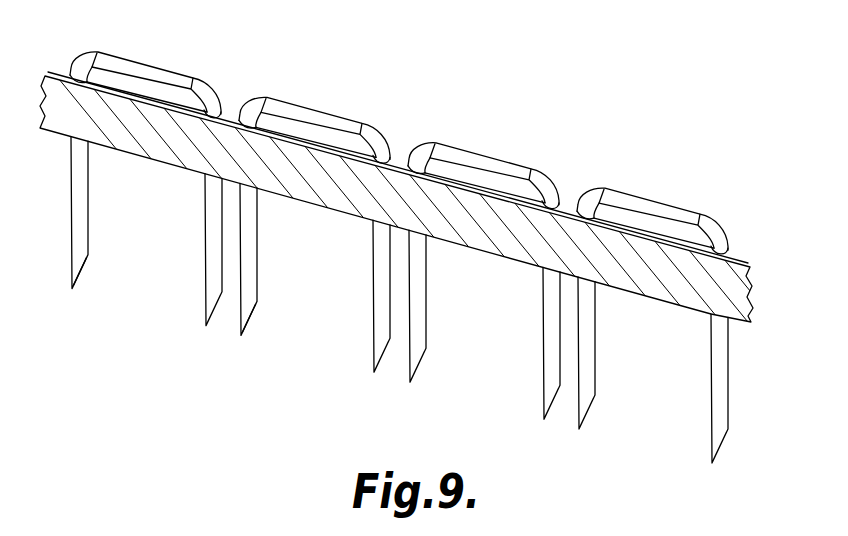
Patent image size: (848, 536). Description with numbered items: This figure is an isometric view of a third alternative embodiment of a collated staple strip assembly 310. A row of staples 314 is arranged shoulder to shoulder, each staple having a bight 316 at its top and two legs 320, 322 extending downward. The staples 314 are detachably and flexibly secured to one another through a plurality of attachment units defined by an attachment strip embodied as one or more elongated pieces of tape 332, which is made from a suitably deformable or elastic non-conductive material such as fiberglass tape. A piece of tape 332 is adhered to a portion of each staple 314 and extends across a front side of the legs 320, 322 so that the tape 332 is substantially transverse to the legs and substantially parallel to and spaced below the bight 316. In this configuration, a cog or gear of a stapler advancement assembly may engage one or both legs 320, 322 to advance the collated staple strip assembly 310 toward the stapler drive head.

The collated staple strip assembly 310 is at (422, 236).
The tape 332 is at (746, 257).
The bight 316 is at (147, 68).
The leg 320 is at (88, 220).
The leg 322 is at (205, 277).
The staple 314 is at (72, 304).